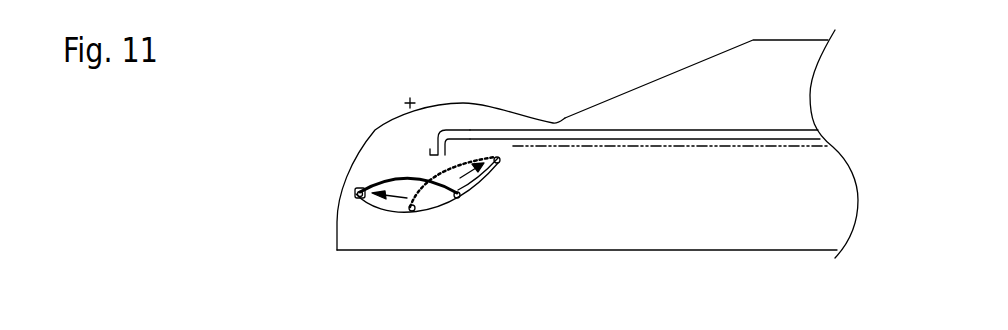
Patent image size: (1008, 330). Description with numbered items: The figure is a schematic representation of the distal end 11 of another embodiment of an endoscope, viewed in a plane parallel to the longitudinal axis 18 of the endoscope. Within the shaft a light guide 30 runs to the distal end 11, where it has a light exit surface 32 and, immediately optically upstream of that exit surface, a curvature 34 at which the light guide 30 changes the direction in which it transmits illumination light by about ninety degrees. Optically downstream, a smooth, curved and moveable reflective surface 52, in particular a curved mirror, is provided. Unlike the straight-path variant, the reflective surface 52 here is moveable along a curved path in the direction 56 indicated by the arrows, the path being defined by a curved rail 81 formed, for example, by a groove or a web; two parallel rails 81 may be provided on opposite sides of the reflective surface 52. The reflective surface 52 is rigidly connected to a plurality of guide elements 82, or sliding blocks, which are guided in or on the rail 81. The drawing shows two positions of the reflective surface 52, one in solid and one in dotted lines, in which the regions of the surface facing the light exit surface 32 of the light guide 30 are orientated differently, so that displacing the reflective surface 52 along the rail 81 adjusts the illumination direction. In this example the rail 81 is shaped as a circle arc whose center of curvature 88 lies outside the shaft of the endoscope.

The distal end 11 is at (298, 76).
The longitudinal axis 18 is at (628, 146).
The light guide 30 is at (688, 133).
The light exit surface 32 is at (433, 152).
The curvature 34 is at (430, 149).
The curved reflective surface 52 is at (395, 178).
The direction of movement 56 is at (394, 195).
The curved rail 81 is at (373, 206).
The guide elements 82 is at (358, 192).
The center of curvature 88 is at (408, 102).